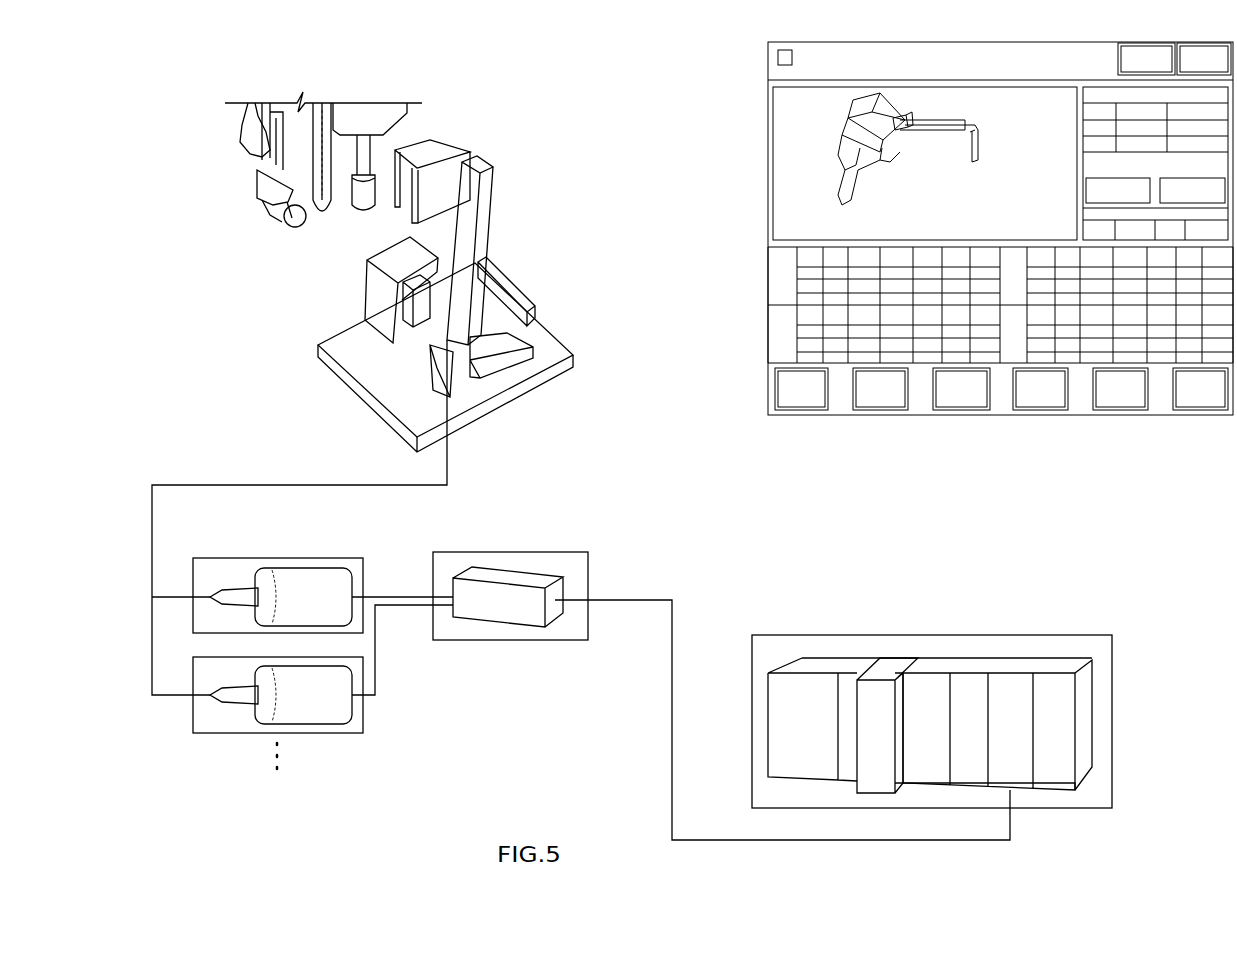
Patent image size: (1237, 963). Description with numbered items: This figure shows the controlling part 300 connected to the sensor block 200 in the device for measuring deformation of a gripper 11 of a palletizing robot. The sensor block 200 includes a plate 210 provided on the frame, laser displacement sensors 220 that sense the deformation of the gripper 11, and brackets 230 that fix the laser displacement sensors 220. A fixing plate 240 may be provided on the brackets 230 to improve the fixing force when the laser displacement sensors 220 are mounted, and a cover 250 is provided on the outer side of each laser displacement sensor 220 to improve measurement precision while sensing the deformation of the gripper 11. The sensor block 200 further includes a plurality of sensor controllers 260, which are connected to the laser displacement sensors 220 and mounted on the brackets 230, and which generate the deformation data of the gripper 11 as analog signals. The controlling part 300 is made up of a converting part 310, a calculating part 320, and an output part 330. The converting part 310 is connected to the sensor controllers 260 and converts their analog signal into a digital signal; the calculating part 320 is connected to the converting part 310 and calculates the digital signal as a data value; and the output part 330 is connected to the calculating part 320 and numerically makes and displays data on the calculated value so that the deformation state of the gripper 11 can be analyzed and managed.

The gripper 11 is at (226, 130).
The sensor block 200 is at (628, 187).
The plate 210 is at (543, 338).
The laser displacement sensor 220 is at (420, 298).
The bracket 230 is at (486, 182).
The fixing plate 240 is at (427, 202).
The cover 250 is at (435, 150).
The sensor controller 260 is at (277, 558).
The controlling part 300 is at (645, 503).
The converting part 310 is at (588, 552).
The calculating part 320 is at (752, 638).
The output part 330 is at (768, 412).